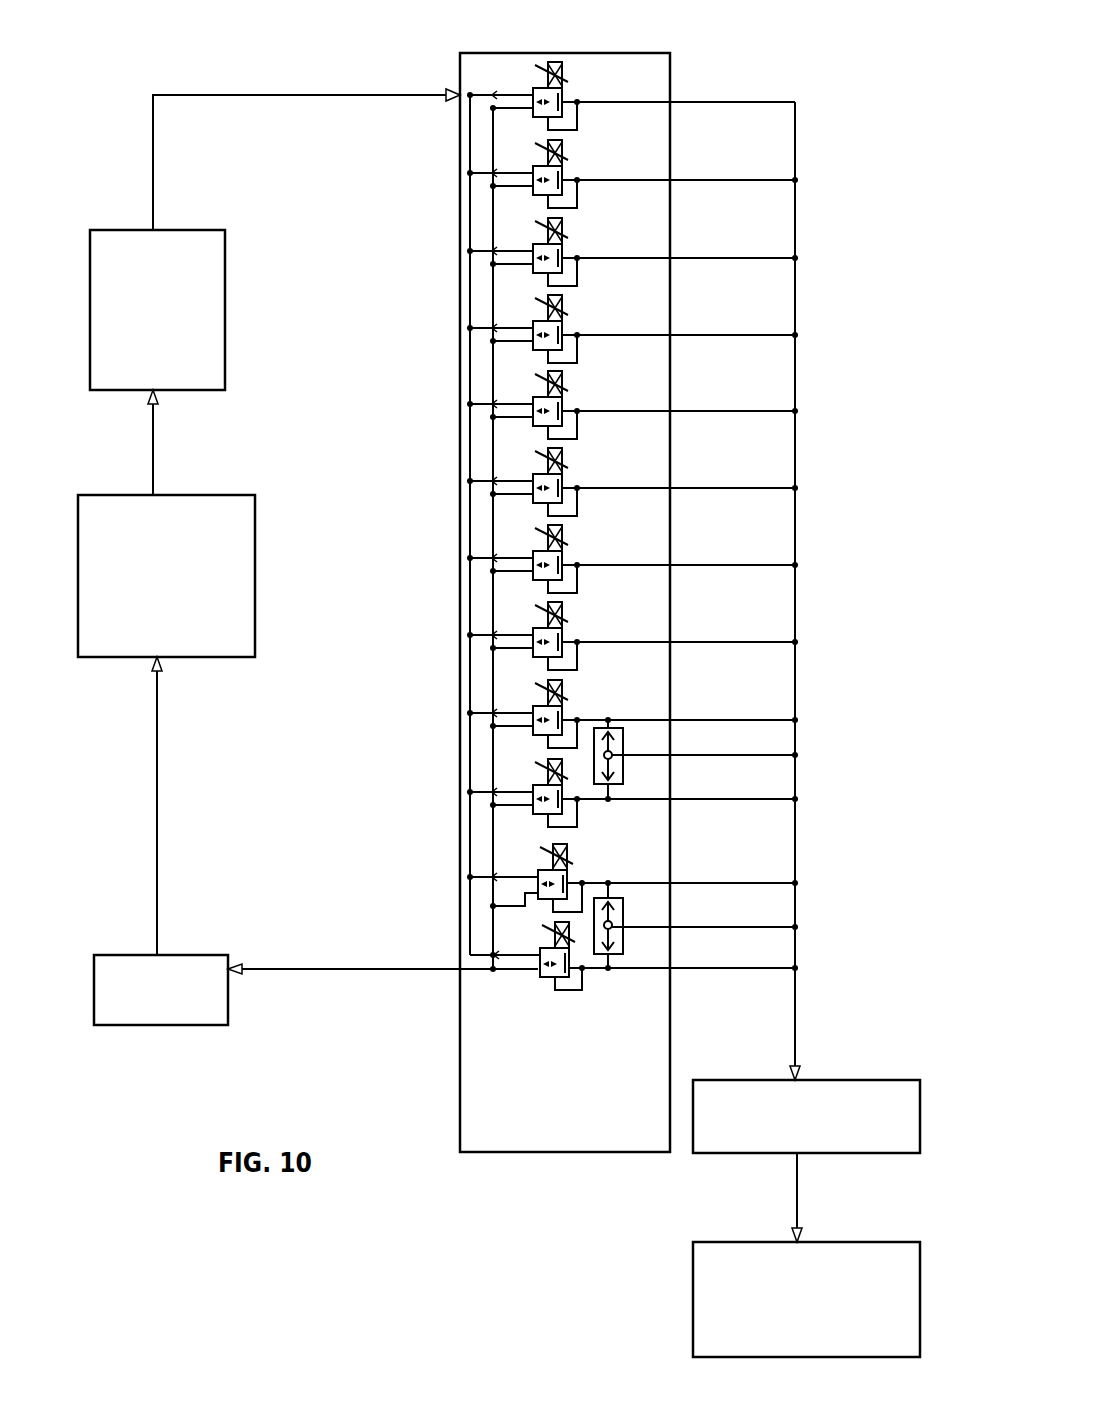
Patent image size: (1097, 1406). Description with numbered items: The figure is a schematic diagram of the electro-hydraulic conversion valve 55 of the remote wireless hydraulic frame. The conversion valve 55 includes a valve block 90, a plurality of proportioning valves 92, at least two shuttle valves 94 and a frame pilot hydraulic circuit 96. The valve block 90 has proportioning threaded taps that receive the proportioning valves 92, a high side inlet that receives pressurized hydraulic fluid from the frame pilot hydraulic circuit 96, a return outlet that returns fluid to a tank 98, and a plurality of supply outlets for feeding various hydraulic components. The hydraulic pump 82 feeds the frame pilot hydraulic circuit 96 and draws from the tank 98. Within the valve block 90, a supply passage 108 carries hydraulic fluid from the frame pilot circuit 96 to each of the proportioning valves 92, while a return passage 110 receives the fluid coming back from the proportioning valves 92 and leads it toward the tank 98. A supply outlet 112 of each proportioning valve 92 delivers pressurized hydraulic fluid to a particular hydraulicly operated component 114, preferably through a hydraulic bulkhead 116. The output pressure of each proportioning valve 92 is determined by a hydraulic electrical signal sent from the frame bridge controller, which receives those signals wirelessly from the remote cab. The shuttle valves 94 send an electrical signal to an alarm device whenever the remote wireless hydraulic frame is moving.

The electro-hydraulic conversion valve 55 is at (568, 1091).
The hydraulic pump 82 is at (166, 523).
The valve block 90 is at (642, 52).
The proportioning valve 92 is at (555, 60).
The shuttle valve 94 is at (625, 745).
The frame pilot hydraulic circuit 96 is at (275, 239).
The tank 98 is at (316, 841).
The supply passage 108 is at (470, 210).
The return passage 110 is at (493, 343).
The supply outlet 112 is at (710, 178).
The hydraulicly operated component 114 is at (806, 1299).
The hydraulic bulkhead 116 is at (806, 1161).